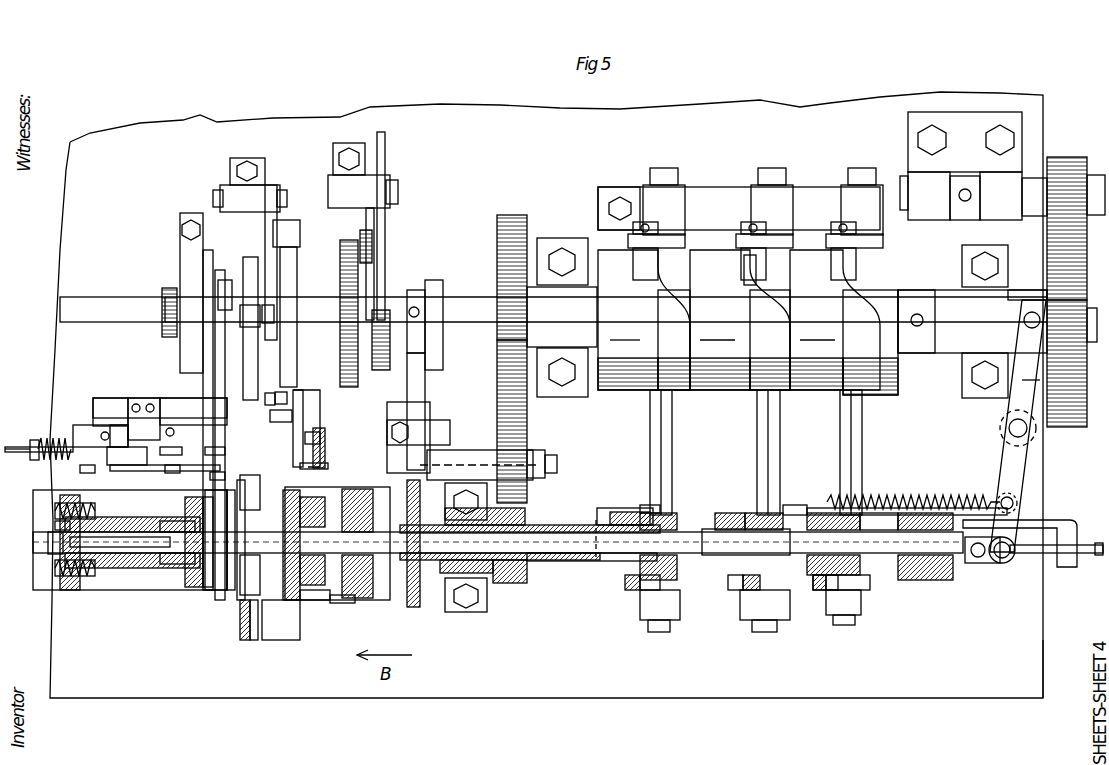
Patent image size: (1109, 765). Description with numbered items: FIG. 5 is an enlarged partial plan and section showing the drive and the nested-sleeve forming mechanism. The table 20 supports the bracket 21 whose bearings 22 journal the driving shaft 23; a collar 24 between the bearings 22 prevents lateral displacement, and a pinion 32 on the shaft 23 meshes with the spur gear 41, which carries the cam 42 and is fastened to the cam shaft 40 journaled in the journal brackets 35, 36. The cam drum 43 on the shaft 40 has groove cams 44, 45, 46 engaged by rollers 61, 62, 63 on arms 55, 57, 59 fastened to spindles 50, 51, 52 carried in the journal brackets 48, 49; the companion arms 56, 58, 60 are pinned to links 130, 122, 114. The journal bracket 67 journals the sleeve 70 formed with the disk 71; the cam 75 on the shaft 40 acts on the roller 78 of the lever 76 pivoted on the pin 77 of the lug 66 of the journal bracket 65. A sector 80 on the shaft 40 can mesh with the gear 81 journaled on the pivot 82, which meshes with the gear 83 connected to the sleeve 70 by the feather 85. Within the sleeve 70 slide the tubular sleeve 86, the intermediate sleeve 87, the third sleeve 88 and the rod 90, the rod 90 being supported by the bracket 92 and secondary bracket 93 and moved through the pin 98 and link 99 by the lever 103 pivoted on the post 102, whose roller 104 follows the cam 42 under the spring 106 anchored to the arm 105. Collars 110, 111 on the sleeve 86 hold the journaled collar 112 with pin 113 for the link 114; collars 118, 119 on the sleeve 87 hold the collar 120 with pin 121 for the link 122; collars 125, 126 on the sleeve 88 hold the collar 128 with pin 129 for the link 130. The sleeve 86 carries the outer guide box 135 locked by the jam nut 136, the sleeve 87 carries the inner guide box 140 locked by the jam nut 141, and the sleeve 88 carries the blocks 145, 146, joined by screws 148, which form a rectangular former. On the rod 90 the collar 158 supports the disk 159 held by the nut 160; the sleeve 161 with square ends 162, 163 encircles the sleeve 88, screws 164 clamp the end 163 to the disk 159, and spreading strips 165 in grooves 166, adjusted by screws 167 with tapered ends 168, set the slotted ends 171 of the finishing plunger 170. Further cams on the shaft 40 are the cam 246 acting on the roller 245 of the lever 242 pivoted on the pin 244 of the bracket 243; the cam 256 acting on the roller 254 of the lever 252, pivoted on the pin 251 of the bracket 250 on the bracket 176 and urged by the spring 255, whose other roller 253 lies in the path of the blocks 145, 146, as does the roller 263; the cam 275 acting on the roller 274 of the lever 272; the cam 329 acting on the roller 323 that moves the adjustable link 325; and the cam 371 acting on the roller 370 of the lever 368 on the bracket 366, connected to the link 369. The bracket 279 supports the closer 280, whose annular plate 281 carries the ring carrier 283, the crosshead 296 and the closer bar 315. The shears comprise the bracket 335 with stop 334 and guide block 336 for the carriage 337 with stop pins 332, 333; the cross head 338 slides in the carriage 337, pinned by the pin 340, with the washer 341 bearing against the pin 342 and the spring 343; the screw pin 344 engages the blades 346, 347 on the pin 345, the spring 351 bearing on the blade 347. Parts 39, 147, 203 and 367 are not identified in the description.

The frame 20 is at (985, 669).
The bearing cap 21 is at (965, 142).
The bearing blocks 22 is at (965, 196).
The collar 23 is at (902, 180).
The shaft 24 is at (975, 221).
The gear 32 is at (1068, 157).
The shaft collar 35 is at (972, 321).
The shaft collar 36 is at (562, 317).
The rod 39 is at (16, 435).
The shaft 40 is at (112, 297).
The gear 41 is at (1058, 428).
The crank pin 42 is at (1014, 398).
The cam 43 is at (740, 320).
The cam 44 is at (870, 342).
The cam 45 is at (770, 340).
The cam 46 is at (674, 340).
The bar 48 is at (718, 190).
The sleeve 49 is at (700, 513).
The rod 50 is at (862, 425).
The rod 51 is at (780, 430).
The rod 52 is at (672, 432).
The bolt 55 is at (883, 244).
The nut 56 is at (861, 598).
The bolt 57 is at (793, 243).
The nut 58 is at (782, 600).
The bolt 59 is at (685, 243).
The nut 60 is at (672, 600).
The cam 61 is at (848, 262).
The key 62 is at (758, 262).
The cam 63 is at (650, 262).
The bracket 65 is at (430, 406).
The bolt 66 is at (450, 430).
The bearing block 67 is at (468, 612).
The sleeve 70 is at (530, 528).
The plate 71 is at (413, 607).
The arm 75 is at (436, 280).
The arm 76 is at (418, 386).
The shaft 77 is at (400, 435).
The hub 78 is at (430, 318).
The gear 80 is at (512, 215).
The gear 81 is at (527, 432).
The nut 82 is at (557, 462).
The bearing 83 is at (512, 585).
The sleeve 85 is at (527, 575).
The pin 86 is at (596, 530).
The shaft 87 is at (580, 562).
The collar 88 is at (712, 545).
The rod 90 is at (1090, 556).
The bearing 92 is at (936, 580).
The link 93 is at (1062, 520).
The pin 98 is at (978, 560).
The pin 99 is at (1000, 559).
The pin 102 is at (1009, 434).
The lever 103 is at (1005, 472).
The shaft 104 is at (1006, 300).
The block 105 is at (880, 528).
The spring 106 is at (915, 493).
The plate 110 is at (612, 503).
The plate 111 is at (650, 505).
The sleeve 112 is at (630, 508).
The washer 113 is at (640, 592).
The washer 114 is at (640, 586).
The sleeve 118 is at (733, 514).
The plate 119 is at (782, 505).
The sleeve 120 is at (742, 512).
The washer 121 is at (736, 591).
The washer 122 is at (743, 583).
The sleeve 125 is at (823, 526).
The sleeve 126 is at (860, 567).
The washer 128 is at (812, 592).
The washer 129 is at (830, 592).
The plate 130 is at (870, 584).
The housing 135 is at (365, 600).
The chamber 136 is at (358, 510).
The chamber 140 is at (358, 576).
The bearing 141 is at (319, 512).
The wall 145 is at (290, 600).
The base 146 is at (310, 600).
The bearing 147 is at (318, 570).
The base 148 is at (340, 603).
The rod 158 is at (108, 560).
The nut 159 is at (55, 526).
The cap 160 is at (48, 545).
The sleeve 161 is at (168, 572).
The wall 162 is at (210, 575).
The wall 163 is at (74, 590).
The springs 164 is at (55, 511).
The wall 165 is at (193, 588).
The end wall 166 is at (170, 632).
The sleeve 167 is at (128, 614).
The collar 168 is at (174, 544).
The housing 170 is at (42, 592).
The plate 171 is at (231, 590).
The block 176 is at (325, 450).
The gear 203 is at (340, 362).
The bar 242 is at (265, 232).
The block 243 is at (232, 175).
The bolt 244 is at (216, 197).
The block 245 is at (292, 243).
The bar 246 is at (297, 272).
The bracket 250 is at (320, 405).
The block 251 is at (287, 399).
The pin 252 is at (305, 440).
The rod 253 is at (300, 468).
The collar 254 is at (250, 328).
The collar 255 is at (281, 312).
The bar 256 is at (246, 268).
The block 263 is at (270, 416).
The plate 272 is at (203, 386).
The gear 274 is at (172, 298).
The bar 275 is at (180, 356).
The base 279 is at (282, 642).
The block 280 is at (255, 575).
The block 281 is at (257, 495).
The plate 283 is at (245, 640).
The plate 296 is at (254, 640).
The plate 315 is at (252, 485).
The plate 323 is at (222, 360).
The pin 325 is at (265, 400).
The collar 329 is at (227, 280).
The block 332 is at (193, 417).
The block 333 is at (125, 436).
The block 334 is at (144, 419).
The box 335 is at (115, 398).
The block 336 is at (110, 413).
The block 337 is at (100, 435).
The block 338 is at (127, 455).
The leg 340 is at (92, 477).
The spring 341 is at (42, 436).
The rod 342 is at (30, 452).
The nut 343 is at (40, 443).
The rod 344 is at (140, 471).
The block 345 is at (183, 454).
The block 346 is at (222, 446).
The block 347 is at (226, 480).
The block 351 is at (184, 477).
The block 366 is at (345, 208).
The nut 367 is at (398, 191).
The bar 368 is at (374, 218).
The bar 369 is at (385, 151).
The worm 370 is at (372, 245).
The gear 371 is at (382, 370).